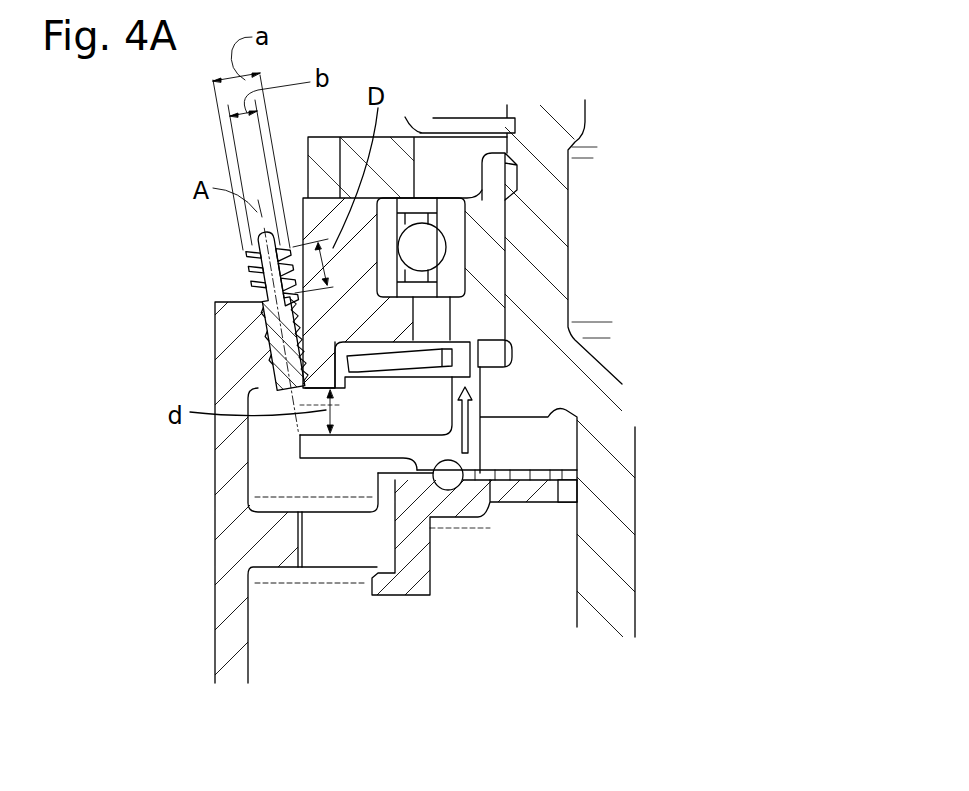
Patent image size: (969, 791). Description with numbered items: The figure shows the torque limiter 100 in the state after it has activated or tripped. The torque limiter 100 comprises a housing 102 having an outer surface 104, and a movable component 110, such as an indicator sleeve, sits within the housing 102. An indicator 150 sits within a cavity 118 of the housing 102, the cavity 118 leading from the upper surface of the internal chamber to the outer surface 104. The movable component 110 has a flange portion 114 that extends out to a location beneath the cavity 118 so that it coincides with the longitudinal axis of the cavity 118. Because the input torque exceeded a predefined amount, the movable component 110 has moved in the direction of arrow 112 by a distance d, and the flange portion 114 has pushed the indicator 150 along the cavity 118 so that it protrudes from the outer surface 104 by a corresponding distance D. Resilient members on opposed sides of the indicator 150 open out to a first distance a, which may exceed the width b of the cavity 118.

The torque limiter 100 is at (160, 513).
The housing 102 is at (227, 573).
The outer surface 104 is at (228, 302).
The movable component 110 is at (365, 448).
The arrow 112 is at (470, 402).
The flange portion 114 is at (313, 450).
The cavity 118 is at (305, 348).
The indicator 150 is at (253, 247).